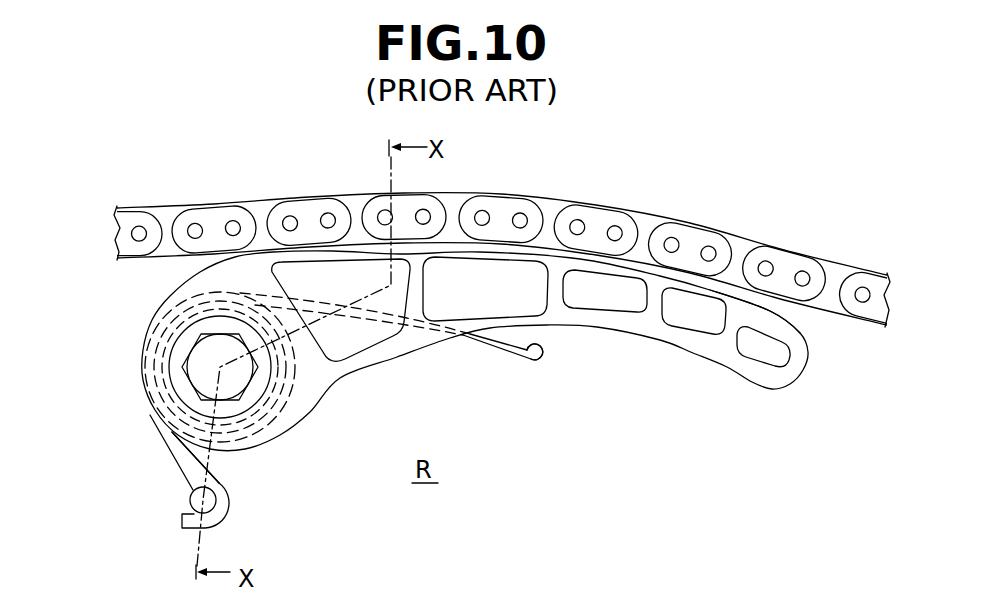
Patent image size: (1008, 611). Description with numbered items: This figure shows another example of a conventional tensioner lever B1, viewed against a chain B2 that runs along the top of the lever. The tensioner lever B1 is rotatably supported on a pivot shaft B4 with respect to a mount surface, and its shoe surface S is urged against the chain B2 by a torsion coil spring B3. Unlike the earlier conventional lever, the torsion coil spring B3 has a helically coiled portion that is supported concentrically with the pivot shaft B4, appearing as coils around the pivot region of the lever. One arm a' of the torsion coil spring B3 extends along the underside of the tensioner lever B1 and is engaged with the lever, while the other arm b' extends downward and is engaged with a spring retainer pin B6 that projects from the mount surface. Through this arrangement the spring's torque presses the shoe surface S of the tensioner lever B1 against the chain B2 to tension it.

The tensioner lever B1 is at (660, 350).
The chain B2 is at (657, 217).
The torsion coil spring B3 is at (492, 349).
The pivot shaft B4 is at (203, 355).
The spring retainer pin B6 is at (192, 492).
The arm a' is at (544, 381).
The arm b' is at (241, 469).
The shoe surface S is at (777, 312).